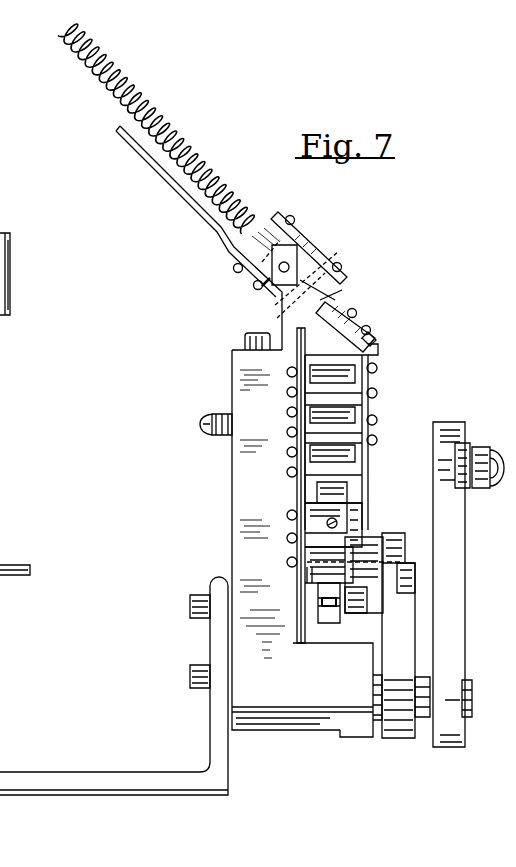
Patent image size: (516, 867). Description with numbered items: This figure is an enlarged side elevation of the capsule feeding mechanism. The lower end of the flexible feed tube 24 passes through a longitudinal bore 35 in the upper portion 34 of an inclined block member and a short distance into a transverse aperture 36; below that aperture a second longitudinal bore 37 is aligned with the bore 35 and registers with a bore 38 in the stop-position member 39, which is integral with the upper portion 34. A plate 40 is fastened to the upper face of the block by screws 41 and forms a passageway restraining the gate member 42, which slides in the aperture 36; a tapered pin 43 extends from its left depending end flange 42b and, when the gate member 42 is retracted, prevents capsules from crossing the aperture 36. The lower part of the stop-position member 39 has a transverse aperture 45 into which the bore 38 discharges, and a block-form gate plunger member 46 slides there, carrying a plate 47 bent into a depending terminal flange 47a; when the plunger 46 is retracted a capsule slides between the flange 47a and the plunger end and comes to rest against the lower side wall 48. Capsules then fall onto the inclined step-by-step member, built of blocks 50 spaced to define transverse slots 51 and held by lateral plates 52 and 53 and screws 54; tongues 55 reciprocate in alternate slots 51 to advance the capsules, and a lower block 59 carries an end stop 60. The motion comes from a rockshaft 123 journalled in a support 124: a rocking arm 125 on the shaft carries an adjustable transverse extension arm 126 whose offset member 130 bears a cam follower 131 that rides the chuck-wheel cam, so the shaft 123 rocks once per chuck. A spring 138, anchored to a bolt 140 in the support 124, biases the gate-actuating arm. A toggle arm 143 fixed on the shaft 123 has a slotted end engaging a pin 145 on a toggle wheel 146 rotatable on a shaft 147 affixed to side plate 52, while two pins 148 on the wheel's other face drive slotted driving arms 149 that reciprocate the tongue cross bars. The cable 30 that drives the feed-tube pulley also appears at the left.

The flexible feed tube 24 is at (108, 73).
The cable 30 is at (12, 566).
The upper portion of inclined block member 34 is at (283, 222).
The longitudinal bore 35 is at (300, 252).
The transverse aperture 36 is at (305, 262).
The longitudinal bore 37 is at (277, 306).
The bore 38 is at (279, 318).
The stop-position member 39 is at (347, 294).
The plate 40 is at (312, 257).
The screws 41 is at (291, 218).
The gate member 42 is at (263, 292).
The left depending end flange 42b is at (233, 269).
The tapered pin 43 is at (253, 286).
The transverse aperture 45 is at (348, 300).
The gate plunger member 46 is at (378, 336).
The plate 47 is at (346, 306).
The depending terminal flange 47a is at (358, 326).
The lower side wall of aperture 48 is at (378, 353).
The blocks 50 is at (287, 414).
The transverse slots 51 is at (358, 383).
The lateral plate 52 is at (295, 492).
The lateral plate 53 is at (367, 497).
The screws 54 is at (287, 470).
The tongues 55 is at (377, 369).
The block 59 is at (305, 549).
The end stop 60 is at (305, 517).
The rockshaft 123 is at (470, 682).
The support 124 is at (334, 695).
The rocking arm 125 is at (460, 572).
The transverse extension arm 126 is at (456, 470).
The offset member 130 is at (498, 484).
The cam follower 131 is at (483, 452).
The spring 138 is at (221, 413).
The bolt 140 is at (203, 418).
The toggle arm 143 is at (414, 635).
The pin 145 is at (407, 562).
The toggle wheel 146 is at (365, 614).
The shaft 147 is at (384, 606).
The pins 148 is at (323, 610).
The driving arms 149 is at (328, 625).